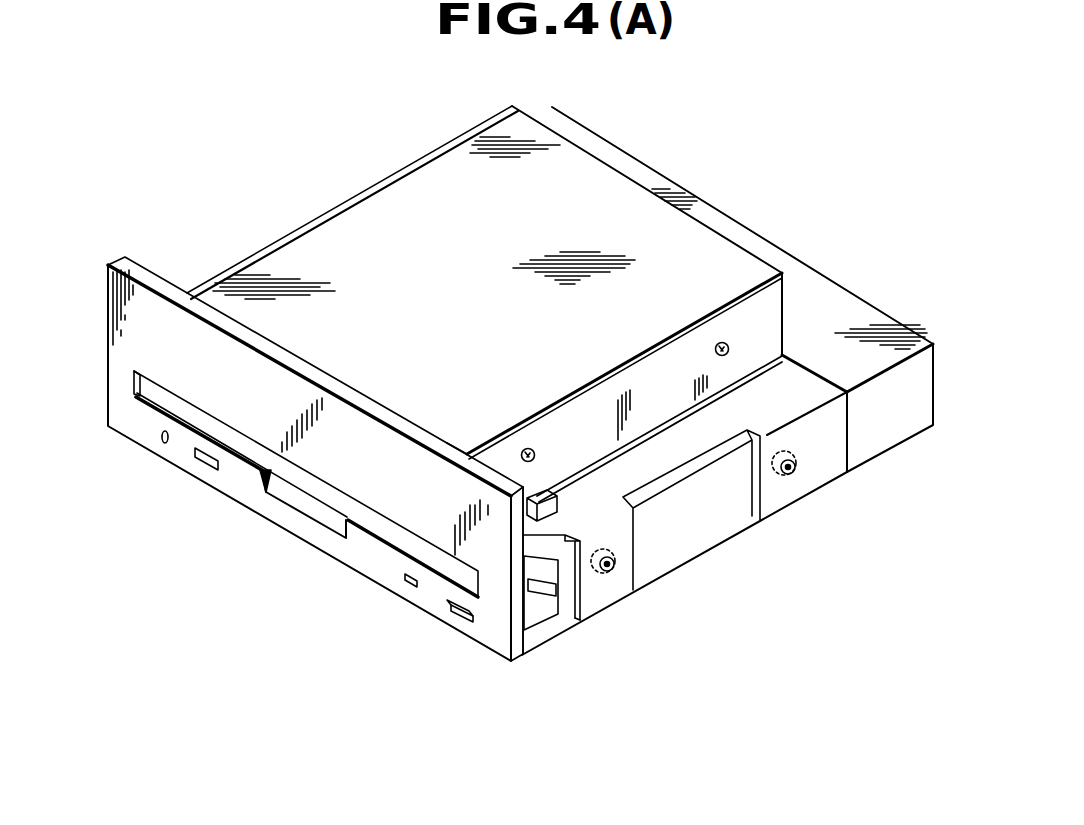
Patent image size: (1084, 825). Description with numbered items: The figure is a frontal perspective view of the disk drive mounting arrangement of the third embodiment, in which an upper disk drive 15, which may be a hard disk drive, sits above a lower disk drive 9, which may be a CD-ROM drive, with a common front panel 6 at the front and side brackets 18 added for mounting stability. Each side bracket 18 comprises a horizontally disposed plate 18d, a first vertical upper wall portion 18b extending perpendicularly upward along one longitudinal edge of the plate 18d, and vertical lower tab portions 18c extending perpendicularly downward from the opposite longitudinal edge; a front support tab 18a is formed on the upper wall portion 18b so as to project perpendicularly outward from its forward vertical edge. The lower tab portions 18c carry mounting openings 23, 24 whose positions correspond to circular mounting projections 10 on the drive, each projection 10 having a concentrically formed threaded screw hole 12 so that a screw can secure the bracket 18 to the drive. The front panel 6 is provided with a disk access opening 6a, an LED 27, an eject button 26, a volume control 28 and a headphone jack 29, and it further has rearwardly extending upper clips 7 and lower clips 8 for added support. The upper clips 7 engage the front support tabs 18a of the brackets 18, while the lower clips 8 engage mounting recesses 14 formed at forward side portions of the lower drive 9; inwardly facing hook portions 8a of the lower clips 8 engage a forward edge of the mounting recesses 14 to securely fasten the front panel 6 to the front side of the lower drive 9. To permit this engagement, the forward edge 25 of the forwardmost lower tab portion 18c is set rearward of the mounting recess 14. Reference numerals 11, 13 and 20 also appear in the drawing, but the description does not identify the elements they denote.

The front panel 6 is at (101, 304).
The disk access opening 6a is at (152, 394).
The upper clip 7 is at (548, 497).
The lower clip 8 is at (540, 604).
The hook portion 8a is at (540, 586).
The lower disk drive 9 is at (895, 308).
The circular mounting projection 10 is at (620, 582).
The screw head 11 is at (782, 480).
The threaded screw hole 12 is at (617, 571).
The screw 13 is at (797, 470).
The mounting recess 14 is at (562, 576).
The upper disk drive 15 is at (587, 187).
The side bracket 18 is at (345, 192).
The front support tab 18a is at (492, 468).
The upper wall portion 18b is at (640, 370).
The lower tab portion 18c is at (615, 572).
The plate 18d is at (797, 388).
The screw 20 is at (718, 344).
The mounting opening 23 is at (616, 559).
The mounting opening 24 is at (776, 506).
The forward edge 25 is at (571, 614).
The eject button 26 is at (456, 607).
The LED 27 is at (407, 582).
The volume control 28 is at (208, 466).
The headphone jack 29 is at (167, 444).